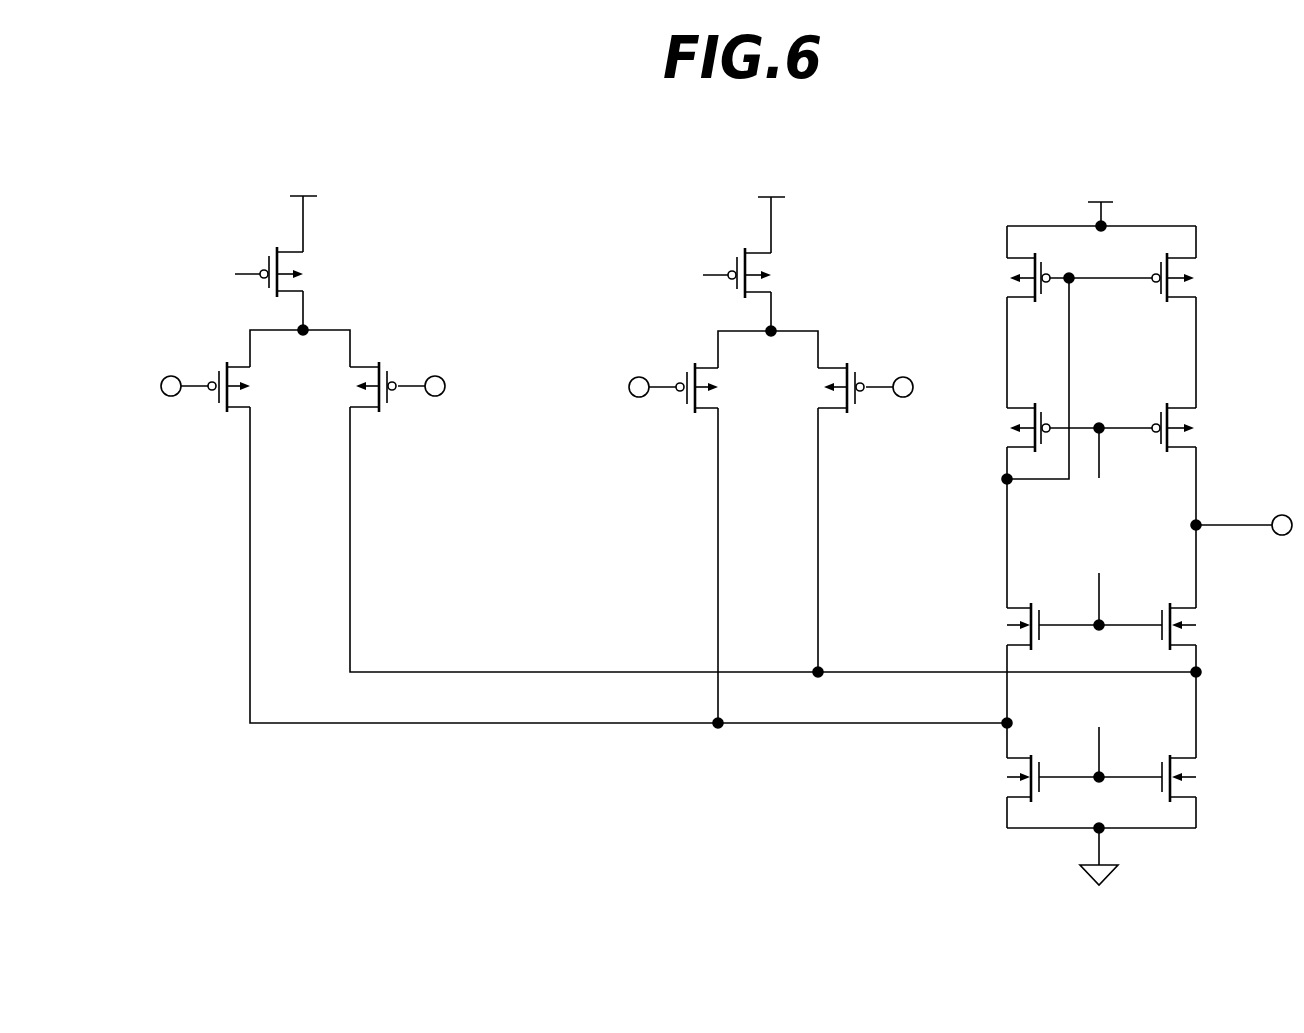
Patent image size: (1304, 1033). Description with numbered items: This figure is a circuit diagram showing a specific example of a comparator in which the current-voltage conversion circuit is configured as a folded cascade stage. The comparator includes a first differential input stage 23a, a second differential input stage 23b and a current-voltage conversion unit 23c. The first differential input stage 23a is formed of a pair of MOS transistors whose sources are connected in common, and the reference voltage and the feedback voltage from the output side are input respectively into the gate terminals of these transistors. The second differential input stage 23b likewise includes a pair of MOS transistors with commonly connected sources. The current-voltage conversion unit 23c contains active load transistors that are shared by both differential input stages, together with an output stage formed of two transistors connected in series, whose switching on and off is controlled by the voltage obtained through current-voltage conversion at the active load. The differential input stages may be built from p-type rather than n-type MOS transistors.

The first differential input stage 23a is at (680, 297).
The second differential input stage 23b is at (410, 289).
The current-voltage conversion unit 23c is at (950, 290).